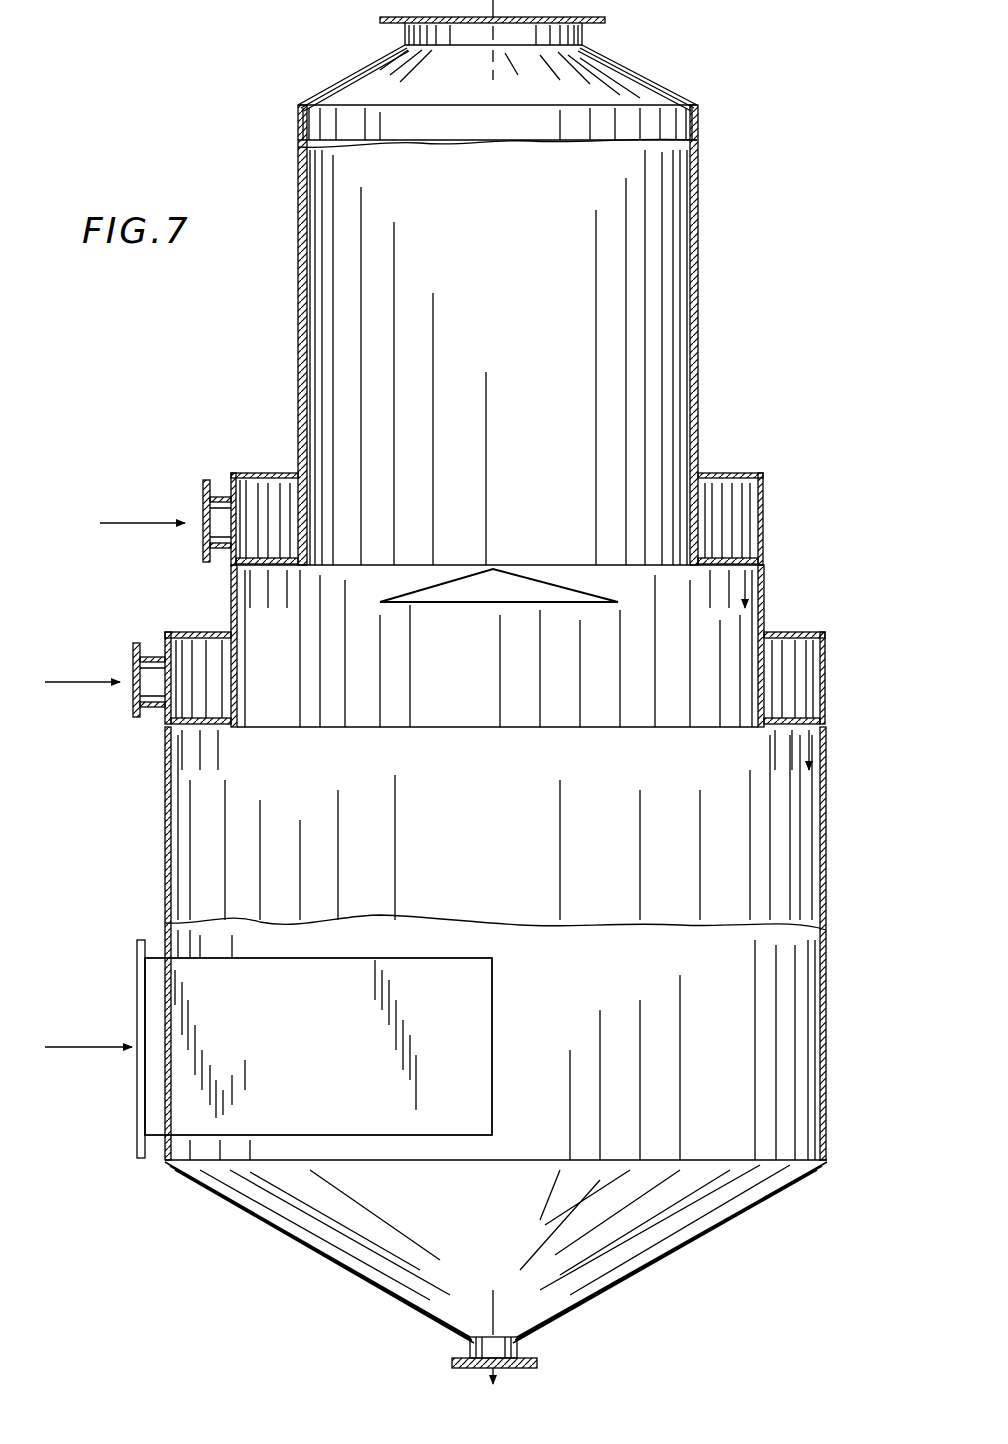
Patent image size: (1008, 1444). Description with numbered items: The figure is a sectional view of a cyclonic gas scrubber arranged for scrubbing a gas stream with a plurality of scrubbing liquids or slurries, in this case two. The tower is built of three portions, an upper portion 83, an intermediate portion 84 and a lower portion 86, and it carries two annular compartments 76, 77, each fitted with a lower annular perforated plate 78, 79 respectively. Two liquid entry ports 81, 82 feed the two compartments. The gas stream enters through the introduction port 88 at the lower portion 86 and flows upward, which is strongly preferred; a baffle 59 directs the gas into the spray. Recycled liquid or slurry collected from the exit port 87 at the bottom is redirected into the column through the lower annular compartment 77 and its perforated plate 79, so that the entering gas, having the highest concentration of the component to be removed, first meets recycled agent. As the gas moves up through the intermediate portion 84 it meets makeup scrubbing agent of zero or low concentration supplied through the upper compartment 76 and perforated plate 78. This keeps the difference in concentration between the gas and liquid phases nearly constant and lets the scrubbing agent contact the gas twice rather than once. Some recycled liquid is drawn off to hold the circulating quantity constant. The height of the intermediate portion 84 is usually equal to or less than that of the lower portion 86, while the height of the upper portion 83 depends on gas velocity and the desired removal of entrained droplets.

The baffle 59 is at (550, 585).
The upper annular compartment 76 is at (763, 497).
The lower annular compartment 77 is at (797, 668).
The lower annular perforated plate 78 is at (730, 557).
The lower annular perforated plate 79 is at (793, 717).
The liquid entry port 81 is at (203, 500).
The liquid entry port 82 is at (138, 693).
The upper portion 83 is at (698, 297).
The intermediate portion 84 is at (764, 600).
The lower portion 86 is at (826, 1053).
The exit port 87 is at (518, 1348).
The introduction port 88 is at (163, 1140).